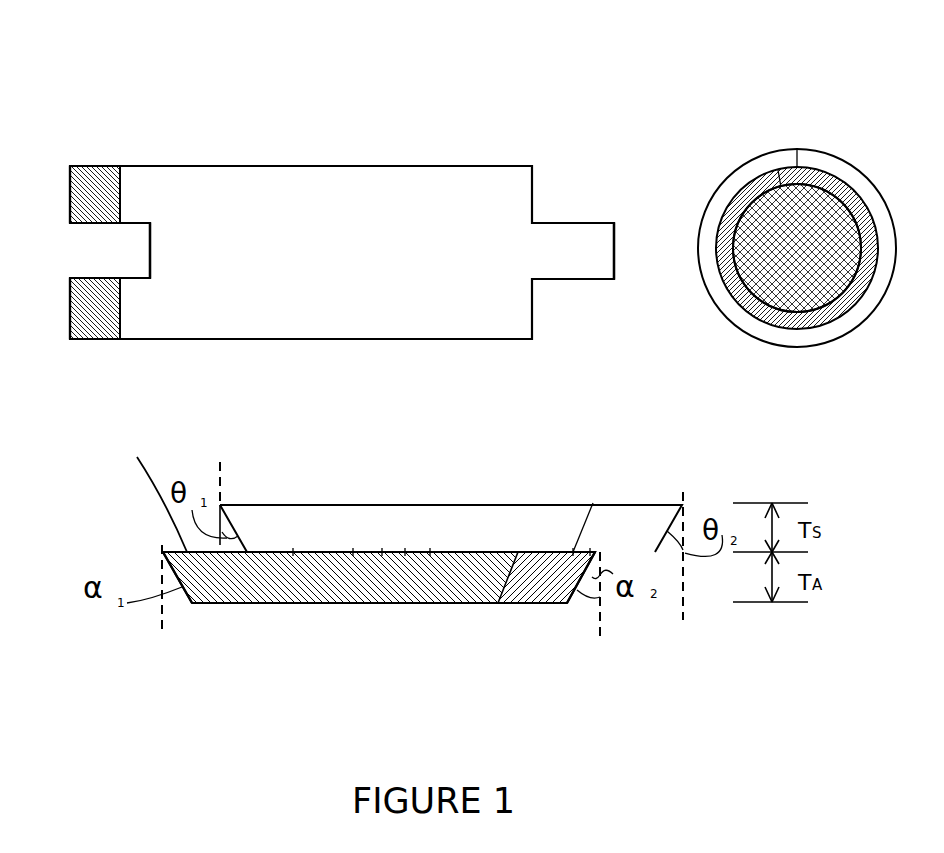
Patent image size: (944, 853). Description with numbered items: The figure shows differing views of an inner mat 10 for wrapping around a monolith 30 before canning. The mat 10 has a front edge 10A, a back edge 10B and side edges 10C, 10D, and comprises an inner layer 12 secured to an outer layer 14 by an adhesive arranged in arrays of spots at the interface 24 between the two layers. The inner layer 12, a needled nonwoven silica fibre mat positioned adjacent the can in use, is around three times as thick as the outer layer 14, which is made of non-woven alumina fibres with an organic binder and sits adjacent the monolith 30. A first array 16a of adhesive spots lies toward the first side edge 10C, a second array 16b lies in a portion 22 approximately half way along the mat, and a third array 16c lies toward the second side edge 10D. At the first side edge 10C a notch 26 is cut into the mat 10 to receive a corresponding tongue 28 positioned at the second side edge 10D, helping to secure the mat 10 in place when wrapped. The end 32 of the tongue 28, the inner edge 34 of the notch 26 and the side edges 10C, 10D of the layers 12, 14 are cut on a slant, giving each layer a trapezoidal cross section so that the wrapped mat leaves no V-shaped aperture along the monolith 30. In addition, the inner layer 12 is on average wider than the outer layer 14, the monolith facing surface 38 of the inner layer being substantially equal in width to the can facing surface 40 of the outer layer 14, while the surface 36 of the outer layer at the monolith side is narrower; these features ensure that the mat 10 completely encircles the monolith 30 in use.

The inner mat 10 is at (228, 98).
The front edge 10A is at (282, 339).
The back edge 10B is at (233, 166).
The first side edge 10C is at (62, 203).
The second side edge 10D is at (567, 218).
The inner layer 12 is at (473, 167).
The outer layer 14 is at (90, 172).
The first array 16a is at (278, 553).
The second array 16b is at (407, 548).
The third array 16c is at (585, 552).
The portion 22 is at (332, 150).
The interface 24 is at (313, 553).
The notch 26 is at (98, 252).
The tongue 28 is at (590, 265).
The monolith 30 is at (833, 258).
The end of the tongue 32 is at (615, 242).
The inner edge of the notch 34 is at (150, 258).
The bottom surface of layer 36 is at (358, 604).
The monolith facing surface 38 is at (328, 553).
The can facing surface 40 is at (152, 491).